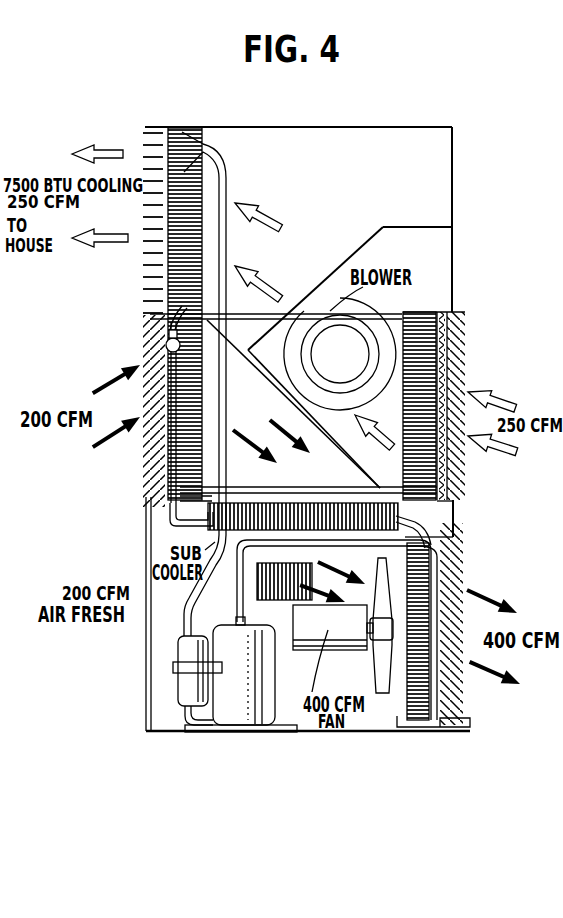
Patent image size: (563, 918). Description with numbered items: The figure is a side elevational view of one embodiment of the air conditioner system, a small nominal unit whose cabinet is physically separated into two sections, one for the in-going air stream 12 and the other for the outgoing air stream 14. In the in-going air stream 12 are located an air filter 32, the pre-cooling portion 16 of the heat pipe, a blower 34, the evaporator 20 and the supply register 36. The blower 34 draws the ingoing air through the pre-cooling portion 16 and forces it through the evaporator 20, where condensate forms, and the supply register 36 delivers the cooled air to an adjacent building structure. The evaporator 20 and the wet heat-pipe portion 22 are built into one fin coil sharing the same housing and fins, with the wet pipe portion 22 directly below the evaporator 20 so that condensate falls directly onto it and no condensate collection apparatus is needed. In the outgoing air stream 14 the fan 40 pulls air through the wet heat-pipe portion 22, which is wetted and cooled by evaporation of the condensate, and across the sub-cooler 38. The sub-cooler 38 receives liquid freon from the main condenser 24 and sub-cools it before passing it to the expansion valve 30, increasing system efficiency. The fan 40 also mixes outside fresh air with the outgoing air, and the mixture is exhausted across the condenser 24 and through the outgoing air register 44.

The in-going air stream 12 is at (420, 388).
The outgoing air stream 14 is at (70, 389).
The pre-cooling portion of the heat-pipe 16 is at (437, 312).
The evaporator 20 is at (218, 147).
The wet heat-pipe portion 22 is at (177, 452).
The main condenser 24 is at (402, 705).
The expansion valve 30 is at (160, 316).
The air filter 32 is at (425, 335).
The blower 34 is at (316, 297).
The supply register 36 is at (147, 152).
The sub-cooler 38 is at (260, 490).
The fan 40 is at (242, 683).
The outgoing air register 44 is at (450, 570).